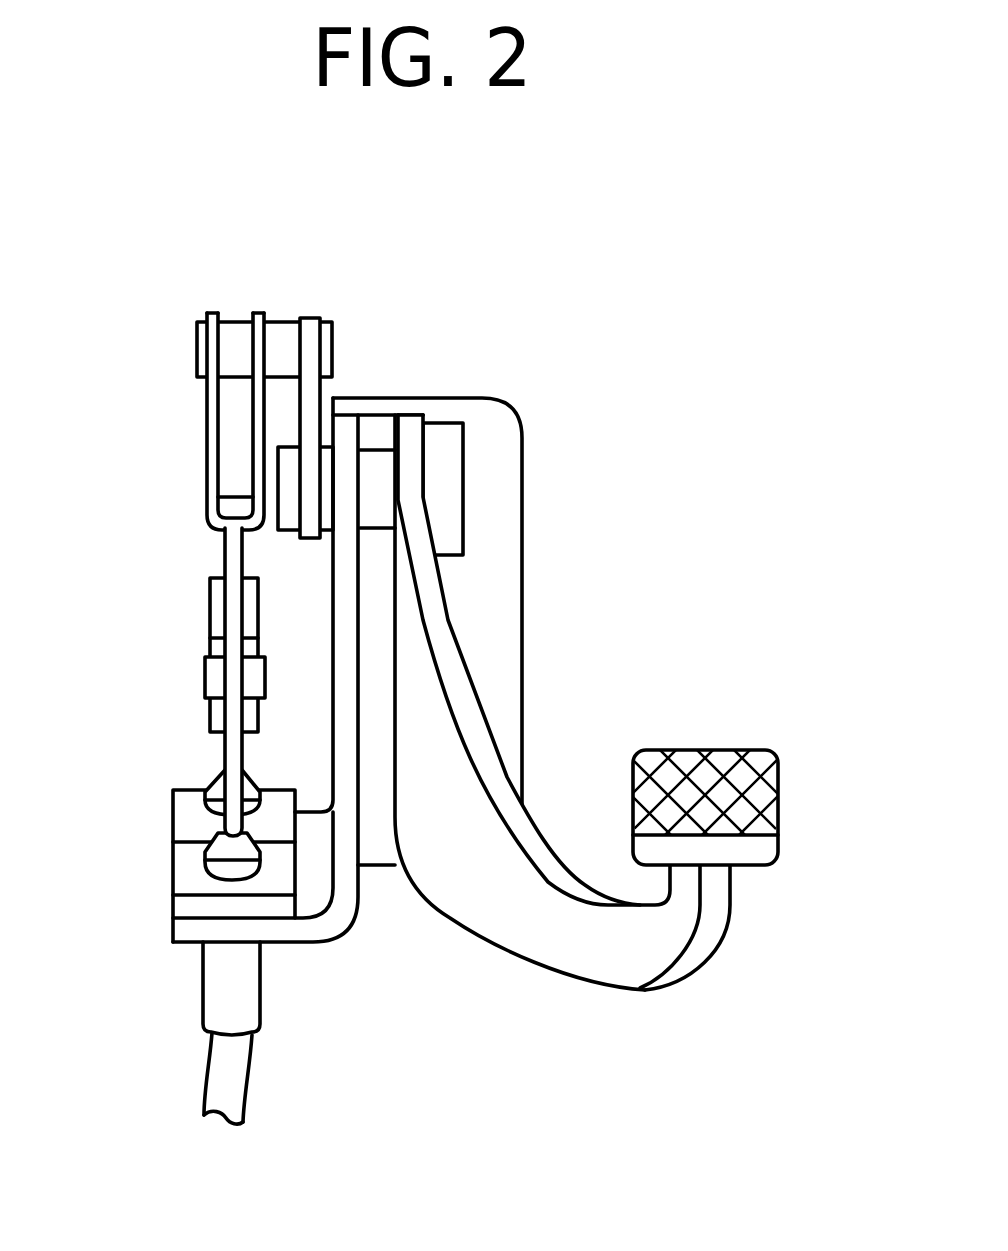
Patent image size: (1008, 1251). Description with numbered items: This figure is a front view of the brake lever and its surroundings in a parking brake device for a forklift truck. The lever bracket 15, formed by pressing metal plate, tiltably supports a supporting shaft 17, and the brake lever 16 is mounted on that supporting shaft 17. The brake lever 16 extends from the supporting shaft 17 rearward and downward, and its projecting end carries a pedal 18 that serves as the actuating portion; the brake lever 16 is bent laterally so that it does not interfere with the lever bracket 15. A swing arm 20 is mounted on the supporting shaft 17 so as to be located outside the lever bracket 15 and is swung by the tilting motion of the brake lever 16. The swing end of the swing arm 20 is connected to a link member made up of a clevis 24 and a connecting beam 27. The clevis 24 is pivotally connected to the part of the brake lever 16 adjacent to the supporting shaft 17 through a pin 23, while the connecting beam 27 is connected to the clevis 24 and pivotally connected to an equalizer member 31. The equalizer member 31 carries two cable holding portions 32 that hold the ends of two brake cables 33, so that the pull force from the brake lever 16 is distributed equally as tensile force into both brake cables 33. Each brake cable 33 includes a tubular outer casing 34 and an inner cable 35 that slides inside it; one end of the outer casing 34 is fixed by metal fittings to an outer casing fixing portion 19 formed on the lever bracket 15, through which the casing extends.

The lever bracket 15 is at (483, 590).
The brake lever 16 is at (470, 687).
The supporting shaft 17 is at (381, 448).
The pedal 18 is at (783, 795).
The outer casing fixing portion 19 is at (183, 943).
The swing arm 20 is at (298, 407).
The pin 23 is at (197, 353).
The clevis 24 is at (207, 482).
The connecting beam 27 is at (222, 553).
The equalizer member 31 is at (210, 628).
The cable holding portion 32 is at (203, 677).
The brake cable 33 is at (224, 1033).
The outer casing 34 is at (213, 1068).
The inner cable 35 is at (217, 747).